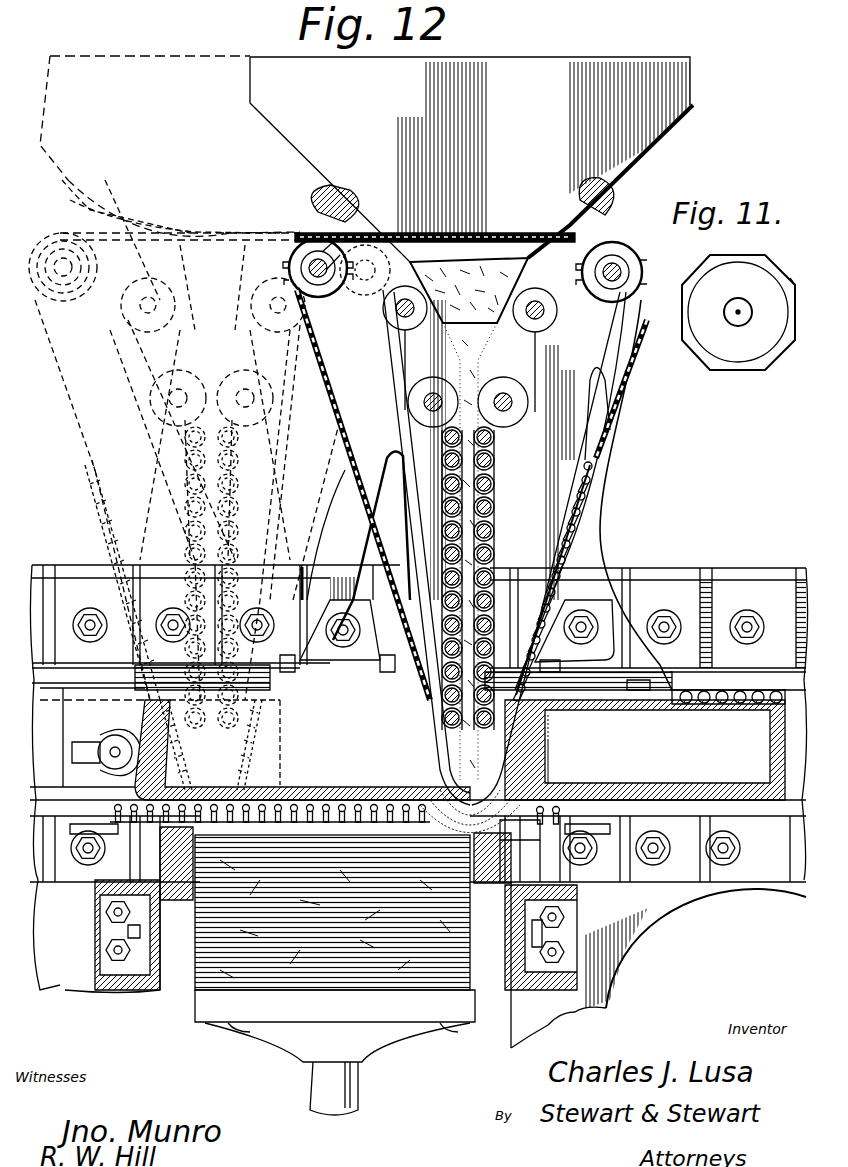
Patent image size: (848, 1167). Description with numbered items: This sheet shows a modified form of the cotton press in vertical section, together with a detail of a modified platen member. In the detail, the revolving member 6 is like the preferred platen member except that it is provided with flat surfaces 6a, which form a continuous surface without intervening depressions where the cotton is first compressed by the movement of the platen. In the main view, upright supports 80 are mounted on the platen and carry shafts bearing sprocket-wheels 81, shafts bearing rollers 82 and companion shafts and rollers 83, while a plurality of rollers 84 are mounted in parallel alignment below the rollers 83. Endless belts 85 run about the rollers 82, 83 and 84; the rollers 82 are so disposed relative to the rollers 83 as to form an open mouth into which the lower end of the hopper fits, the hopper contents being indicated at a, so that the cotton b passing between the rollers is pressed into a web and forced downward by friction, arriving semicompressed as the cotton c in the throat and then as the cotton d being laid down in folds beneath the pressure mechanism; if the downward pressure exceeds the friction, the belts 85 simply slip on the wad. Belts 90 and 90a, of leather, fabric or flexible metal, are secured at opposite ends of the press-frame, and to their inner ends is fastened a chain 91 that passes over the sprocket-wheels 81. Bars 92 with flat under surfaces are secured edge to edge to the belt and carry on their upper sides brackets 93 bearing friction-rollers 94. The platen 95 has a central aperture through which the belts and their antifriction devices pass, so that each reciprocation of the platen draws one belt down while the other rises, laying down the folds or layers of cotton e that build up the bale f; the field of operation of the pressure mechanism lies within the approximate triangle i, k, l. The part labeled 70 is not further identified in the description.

In FIG. 12, the hopper / feed chute a is at (482, 262).
In FIG. 12, the cotton between the feed-rolls b is at (433, 384).
In FIG. 12, the cotton in the throat c is at (552, 748).
In FIG. 12, the cotton being fed beneath the pressure mechanism d is at (552, 768).
In FIG. 12, the folds or layers of cotton e is at (312, 800).
In FIG. 12, the bale f is at (321, 964).
In FIG. 12, the vertex of the triangle i k l i is at (530, 830).
In FIG. 12, the vertex of the triangle i k l k is at (505, 855).
In FIG. 12, the vertex of the triangle i k l is at (385, 800).
In FIG. 11, the revolving member 6 is at (738, 312).
In FIG. 11, the flat surfaces 6a is at (780, 278).
In FIG. 12, the side plate 70 is at (555, 725).
In FIG. 12, the upright supports 80 is at (582, 587).
In FIG. 12, the shafts bearing sprocket-wheels 81 is at (300, 260).
In FIG. 12, the shafts bearing rollers 82 is at (475, 337).
In FIG. 12, the companion shafts and rollers 83 is at (508, 396).
In FIG. 12, the rollers 84 is at (462, 520).
In FIG. 12, the endless belts 85 is at (501, 547).
In FIG. 12, the belt 90 is at (592, 470).
In FIG. 12, the belt 90a is at (410, 664).
In FIG. 12, the chain 91 is at (378, 500).
In FIG. 12, the bars 92 is at (585, 512).
In FIG. 12, the brackets 93 is at (555, 618).
In FIG. 12, the friction-rollers 94 is at (578, 535).
In FIG. 12, the platen 95 is at (645, 750).